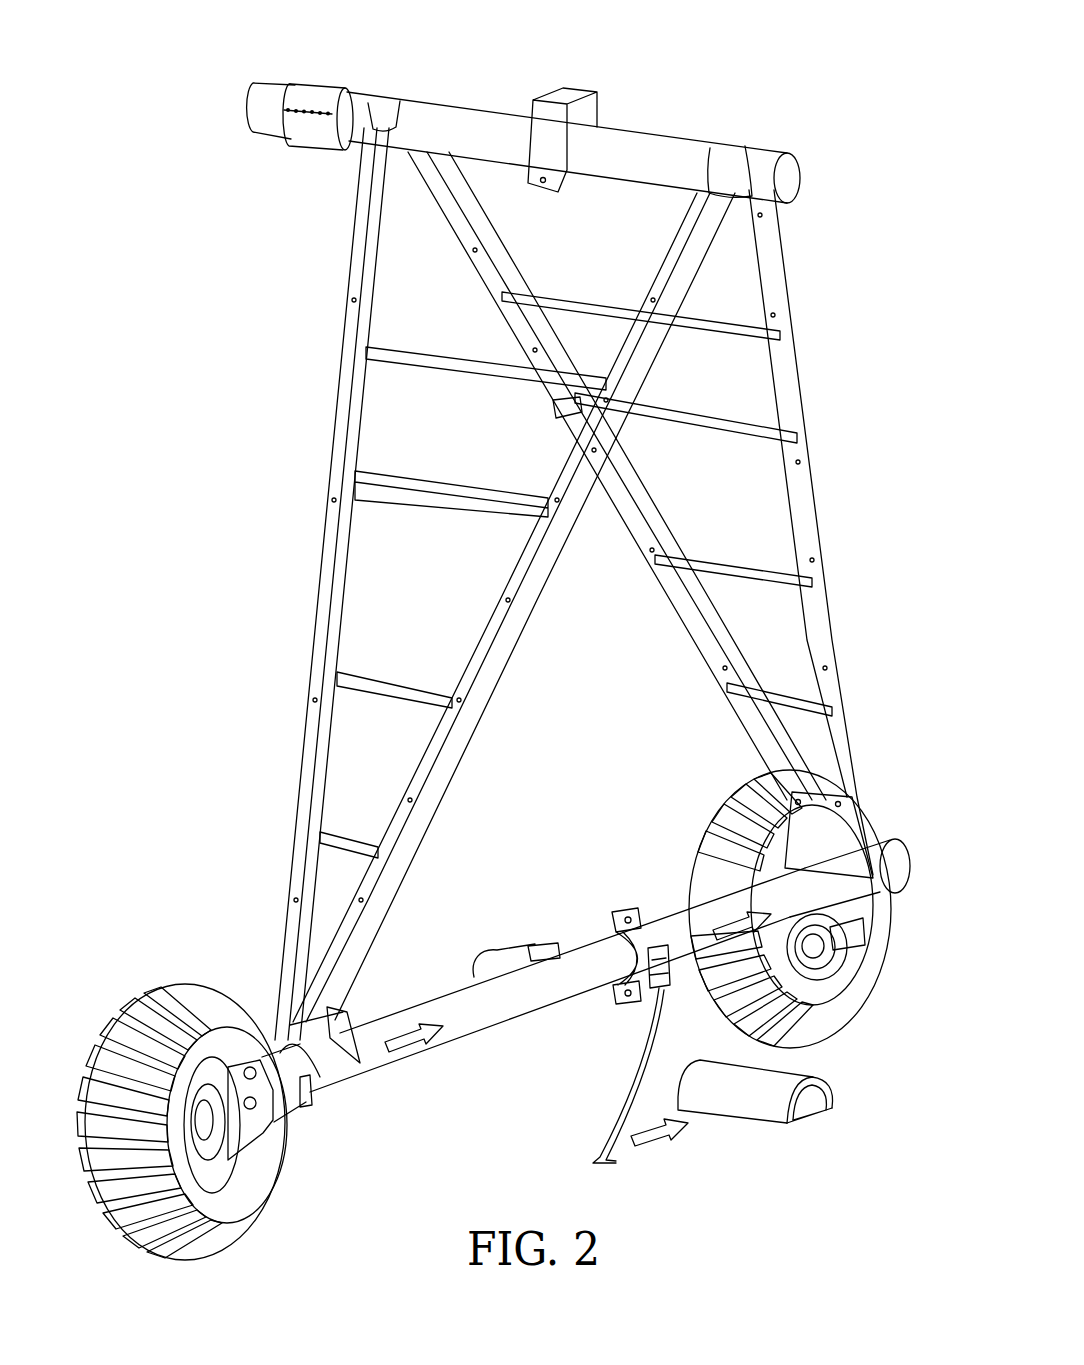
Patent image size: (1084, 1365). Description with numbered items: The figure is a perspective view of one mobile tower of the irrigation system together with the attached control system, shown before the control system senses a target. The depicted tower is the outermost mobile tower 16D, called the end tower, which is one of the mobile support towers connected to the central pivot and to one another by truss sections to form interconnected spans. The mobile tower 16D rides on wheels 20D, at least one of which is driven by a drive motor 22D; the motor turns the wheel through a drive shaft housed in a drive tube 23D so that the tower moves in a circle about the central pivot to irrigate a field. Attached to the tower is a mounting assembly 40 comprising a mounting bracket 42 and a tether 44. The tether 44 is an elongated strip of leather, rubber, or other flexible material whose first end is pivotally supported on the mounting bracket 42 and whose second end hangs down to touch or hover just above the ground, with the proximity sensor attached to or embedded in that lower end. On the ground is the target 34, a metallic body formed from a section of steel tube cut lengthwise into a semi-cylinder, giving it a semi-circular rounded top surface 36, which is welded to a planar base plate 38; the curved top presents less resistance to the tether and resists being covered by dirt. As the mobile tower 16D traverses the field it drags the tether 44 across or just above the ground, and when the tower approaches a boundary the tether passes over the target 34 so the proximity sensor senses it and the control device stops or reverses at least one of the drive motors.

The mobile tower 16D is at (783, 97).
The wheels 20D is at (232, 1205).
The drive motor 22D is at (502, 953).
The drive tube 23D is at (510, 1007).
The target 34 is at (728, 1123).
The rounded top surface 36 is at (785, 1075).
The planar base plate 38 is at (820, 1107).
The mounting assembly 40 is at (640, 888).
The mounting bracket 42 is at (607, 910).
The tether 44 is at (622, 1090).